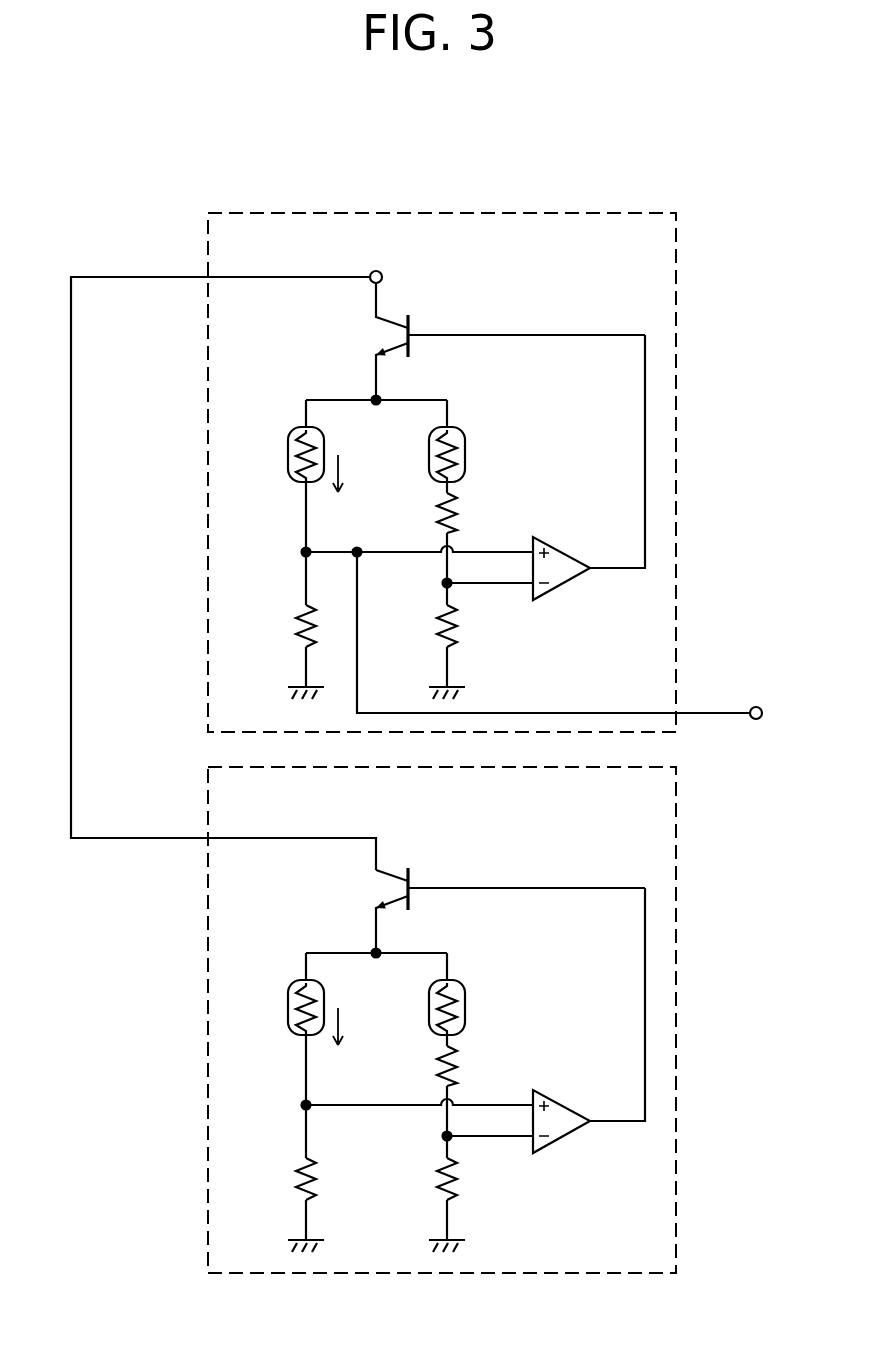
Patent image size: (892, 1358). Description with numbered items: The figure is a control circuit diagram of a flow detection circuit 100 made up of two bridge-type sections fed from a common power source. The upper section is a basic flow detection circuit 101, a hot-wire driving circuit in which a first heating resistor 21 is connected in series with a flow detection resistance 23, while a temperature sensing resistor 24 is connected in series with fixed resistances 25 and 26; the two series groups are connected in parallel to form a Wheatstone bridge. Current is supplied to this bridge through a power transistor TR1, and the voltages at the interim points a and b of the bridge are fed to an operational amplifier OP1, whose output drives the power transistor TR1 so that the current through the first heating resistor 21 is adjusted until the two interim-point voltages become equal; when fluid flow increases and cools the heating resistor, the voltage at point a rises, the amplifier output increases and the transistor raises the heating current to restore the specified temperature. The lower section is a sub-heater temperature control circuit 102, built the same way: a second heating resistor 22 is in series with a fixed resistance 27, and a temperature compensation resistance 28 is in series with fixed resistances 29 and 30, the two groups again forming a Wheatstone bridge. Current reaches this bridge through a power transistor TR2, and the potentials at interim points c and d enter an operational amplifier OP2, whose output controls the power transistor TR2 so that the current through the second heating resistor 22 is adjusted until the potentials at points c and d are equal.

The flow detection circuit 100 is at (601, 198).
The basic flow detection circuit 101 is at (677, 270).
The sub-heater temperature control circuit 102 is at (677, 823).
The first heating resistor 21 is at (288, 456).
The second heating resistor 22 is at (288, 1009).
The flow detection resistance 23 is at (296, 620).
The temperature sensing resistor 24 is at (466, 455).
The fixed resistance 25 is at (458, 509).
The fixed resistance 26 is at (458, 622).
The fixed resistance 27 is at (296, 1173).
The temperature compensation resistance 28 is at (466, 1008).
The fixed resistance 29 is at (458, 1062).
The fixed resistance 30 is at (458, 1175).
The power transistor TR1 is at (410, 318).
The power transistor TR2 is at (410, 871).
The operational amplifier OP1 is at (563, 600).
The operational amplifier OP2 is at (563, 1153).